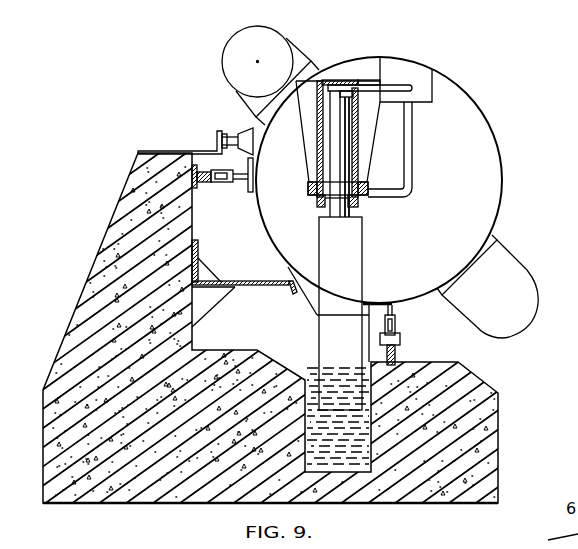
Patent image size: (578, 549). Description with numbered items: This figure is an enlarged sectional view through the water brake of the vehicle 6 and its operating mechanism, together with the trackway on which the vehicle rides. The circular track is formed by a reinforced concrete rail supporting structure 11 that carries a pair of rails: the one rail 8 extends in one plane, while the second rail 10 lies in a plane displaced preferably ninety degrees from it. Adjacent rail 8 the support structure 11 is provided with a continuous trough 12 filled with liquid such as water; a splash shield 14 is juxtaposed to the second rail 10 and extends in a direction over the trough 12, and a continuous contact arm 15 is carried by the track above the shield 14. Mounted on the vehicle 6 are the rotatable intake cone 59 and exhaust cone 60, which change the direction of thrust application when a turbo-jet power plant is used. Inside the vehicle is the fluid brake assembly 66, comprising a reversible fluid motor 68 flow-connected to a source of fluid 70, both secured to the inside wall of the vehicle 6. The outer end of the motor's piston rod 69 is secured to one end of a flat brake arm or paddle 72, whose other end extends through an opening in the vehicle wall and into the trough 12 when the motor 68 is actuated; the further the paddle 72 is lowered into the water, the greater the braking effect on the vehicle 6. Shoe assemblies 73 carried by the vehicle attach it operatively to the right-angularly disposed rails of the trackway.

The vehicle 6 is at (497, 192).
The rail 8 is at (397, 354).
The second rail 10 is at (198, 183).
The reinforced concrete rail supporting structure 11 is at (110, 258).
The trough 12 is at (300, 358).
The splash shield 14 is at (261, 281).
The contact arm 15 is at (217, 138).
The intake cone 59 is at (278, 48).
The exhaust cone 60 is at (515, 318).
The fluid brake assembly 66 is at (364, 208).
The reversible fluid motor 68 is at (320, 135).
The piston rod 69 is at (336, 153).
The source of fluid 70 is at (432, 96).
The brake arm or paddle 72 is at (353, 240).
The shoe assembly 73 is at (402, 338).